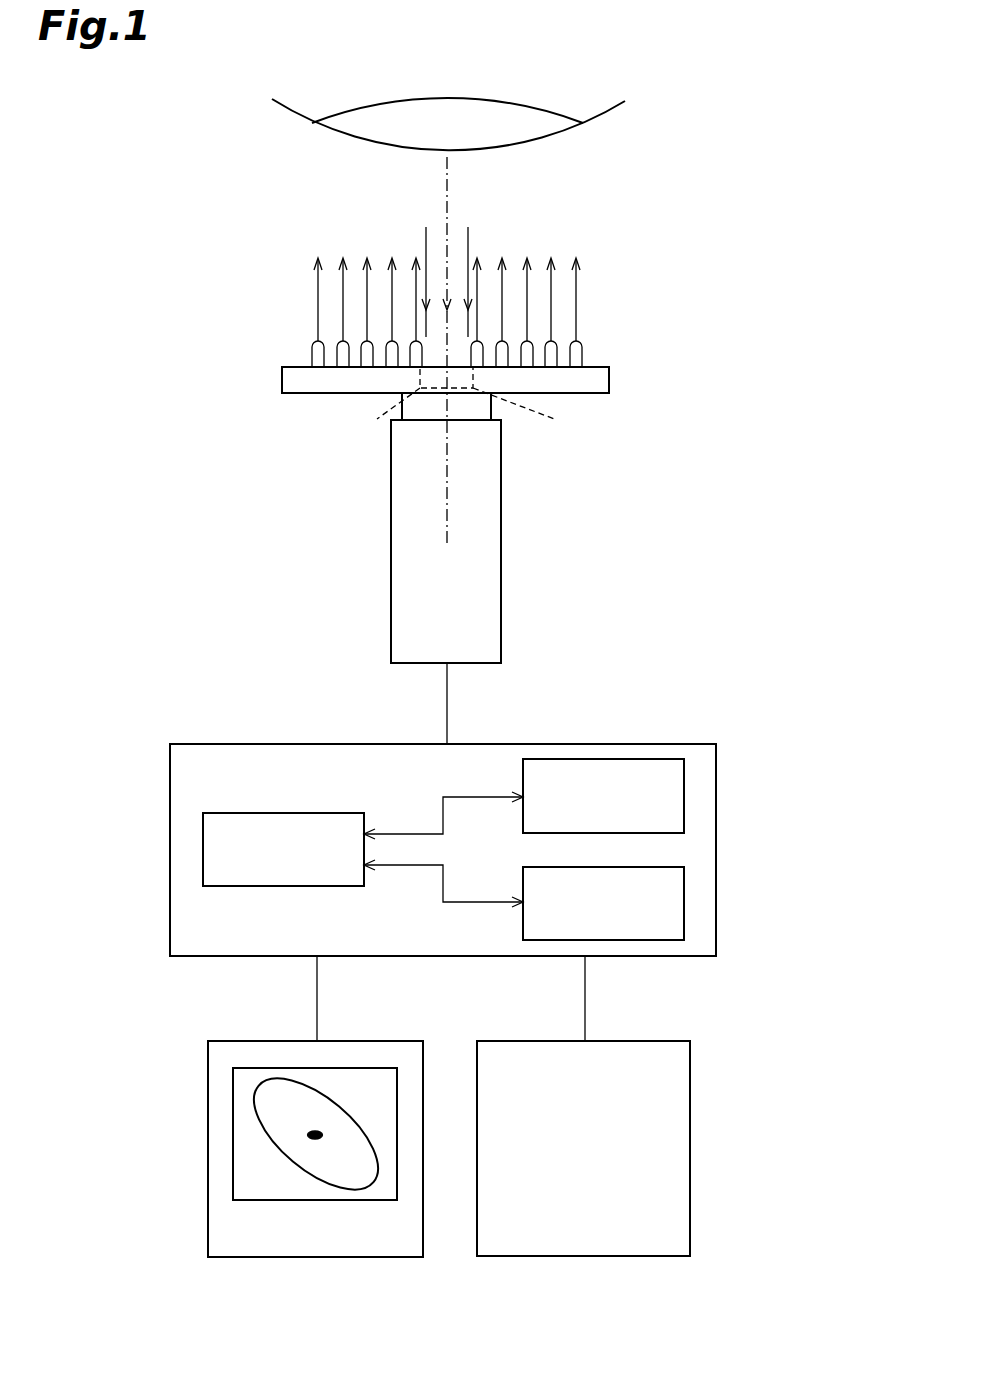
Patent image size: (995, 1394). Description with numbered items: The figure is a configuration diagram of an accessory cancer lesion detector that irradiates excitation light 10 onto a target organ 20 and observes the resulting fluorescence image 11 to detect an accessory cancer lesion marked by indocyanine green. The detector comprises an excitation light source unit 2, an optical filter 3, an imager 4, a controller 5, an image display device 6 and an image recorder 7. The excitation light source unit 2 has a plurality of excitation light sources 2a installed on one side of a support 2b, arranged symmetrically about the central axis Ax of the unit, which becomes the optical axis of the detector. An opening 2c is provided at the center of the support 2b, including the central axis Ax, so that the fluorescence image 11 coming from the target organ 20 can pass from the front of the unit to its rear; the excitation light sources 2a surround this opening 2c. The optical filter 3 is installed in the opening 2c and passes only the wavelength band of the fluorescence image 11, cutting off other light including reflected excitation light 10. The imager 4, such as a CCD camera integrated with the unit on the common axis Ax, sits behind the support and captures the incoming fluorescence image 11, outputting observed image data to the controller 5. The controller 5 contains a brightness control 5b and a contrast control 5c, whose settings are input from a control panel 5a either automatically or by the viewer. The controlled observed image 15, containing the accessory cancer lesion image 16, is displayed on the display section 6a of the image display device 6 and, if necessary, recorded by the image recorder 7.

The target organ 20 is at (545, 108).
The central axis Ax is at (448, 172).
The fluorescence image 11 is at (470, 237).
The excitation light 10 is at (578, 297).
The excitation light source unit 2 is at (450, 397).
The excitation light sources 2a is at (580, 357).
The support 2b is at (600, 382).
The opening 2c is at (420, 388).
The optical filter 3 is at (557, 420).
The imager 4 is at (501, 541).
The controller 5 is at (447, 850).
The control panel 5a is at (203, 850).
The brightness control 5b is at (684, 800).
The contrast control 5c is at (684, 905).
The image display device 6 is at (314, 1132).
The display section 6a is at (233, 1172).
The observed image 15 is at (332, 1100).
The accessory cancer lesion image 16 is at (323, 1133).
The image recorder 7 is at (690, 1110).